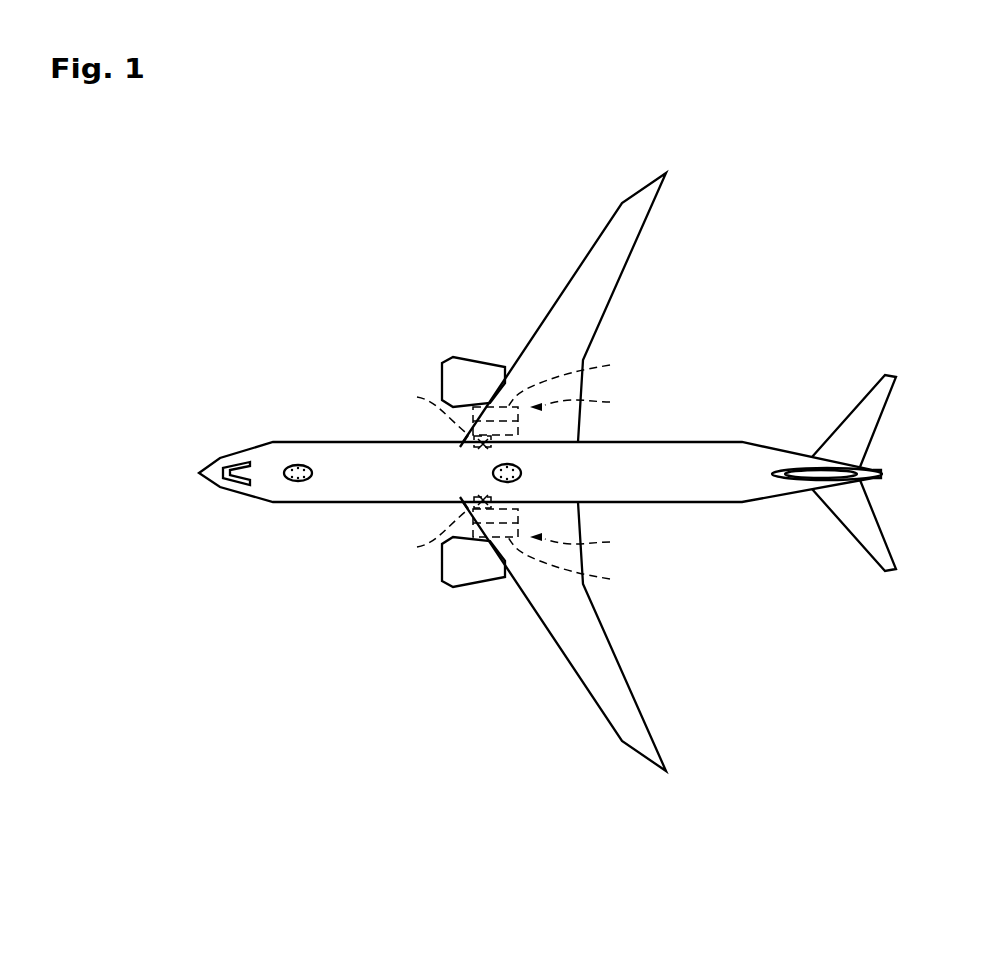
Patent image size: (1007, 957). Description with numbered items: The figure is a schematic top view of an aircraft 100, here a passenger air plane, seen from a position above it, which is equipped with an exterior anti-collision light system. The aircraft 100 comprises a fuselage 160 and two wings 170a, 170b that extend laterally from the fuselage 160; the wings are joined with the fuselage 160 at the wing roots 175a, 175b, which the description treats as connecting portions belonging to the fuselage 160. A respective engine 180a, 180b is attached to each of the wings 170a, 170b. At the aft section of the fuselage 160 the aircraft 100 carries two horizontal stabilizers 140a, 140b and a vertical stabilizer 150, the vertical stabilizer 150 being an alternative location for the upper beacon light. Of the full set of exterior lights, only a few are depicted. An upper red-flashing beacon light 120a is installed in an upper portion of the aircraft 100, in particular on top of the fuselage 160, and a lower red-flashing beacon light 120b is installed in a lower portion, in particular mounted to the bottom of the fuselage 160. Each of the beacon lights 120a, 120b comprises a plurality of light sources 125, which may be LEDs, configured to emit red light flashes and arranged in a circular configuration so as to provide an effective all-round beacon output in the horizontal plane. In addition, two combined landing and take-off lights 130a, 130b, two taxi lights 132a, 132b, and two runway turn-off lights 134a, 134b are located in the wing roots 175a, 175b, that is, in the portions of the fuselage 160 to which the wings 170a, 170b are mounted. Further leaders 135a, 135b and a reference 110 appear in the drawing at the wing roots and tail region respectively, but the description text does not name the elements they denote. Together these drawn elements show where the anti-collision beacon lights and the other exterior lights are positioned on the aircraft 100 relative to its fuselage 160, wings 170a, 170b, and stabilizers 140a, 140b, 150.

The aircraft 100 is at (812, 250).
The tail section 110 is at (897, 428).
The upper red-flashing beacon light 120a is at (493, 473).
The lower red-flashing beacon light 120b is at (297, 482).
The light sources 125 is at (296, 466).
The combined landing and take-off light 130a is at (490, 455).
The combined landing and take-off light 130b is at (490, 489).
The taxi light 132a is at (412, 405).
The taxi light 132b is at (412, 544).
The runway turn-off light 134a is at (589, 378).
The runway turn-off light 134b is at (589, 568).
The first connection line 135a is at (600, 396).
The second connection line 135b is at (600, 548).
The horizontal stabilizer 140a is at (882, 356).
The horizontal stabilizer 140b is at (882, 592).
The vertical stabilizer 150 is at (830, 470).
The fuselage 160 is at (706, 423).
The wing 170a is at (670, 224).
The wing 170b is at (670, 722).
The wing root 175a is at (450, 430).
The wing root 175b is at (450, 514).
The engine 180a is at (455, 345).
The engine 180b is at (455, 604).